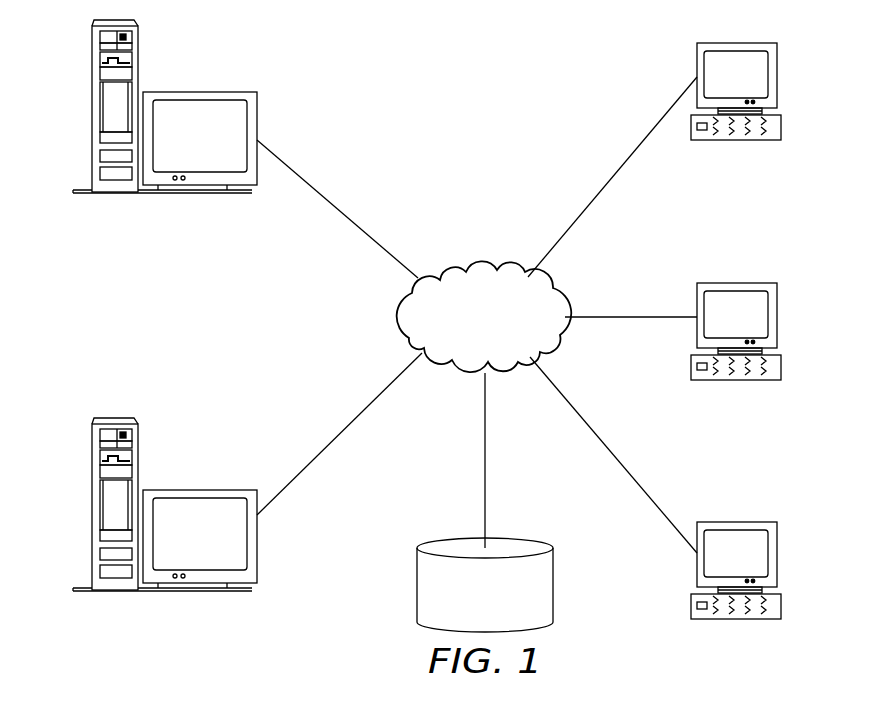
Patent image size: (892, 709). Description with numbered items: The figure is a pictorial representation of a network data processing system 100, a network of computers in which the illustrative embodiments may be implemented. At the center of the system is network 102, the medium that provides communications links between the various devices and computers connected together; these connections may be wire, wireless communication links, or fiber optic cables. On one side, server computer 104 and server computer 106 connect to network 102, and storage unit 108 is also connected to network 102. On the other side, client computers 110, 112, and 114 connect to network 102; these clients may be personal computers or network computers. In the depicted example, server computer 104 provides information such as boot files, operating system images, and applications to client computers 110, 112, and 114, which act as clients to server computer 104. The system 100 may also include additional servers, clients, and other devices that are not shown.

The network data processing system 100 is at (541, 70).
The network 102 is at (455, 262).
The server computer 104 is at (93, 107).
The server computer 106 is at (93, 506).
The storage unit 108 is at (417, 594).
The client computer 110 is at (777, 75).
The client computer 112 is at (777, 315).
The client computer 114 is at (777, 553).